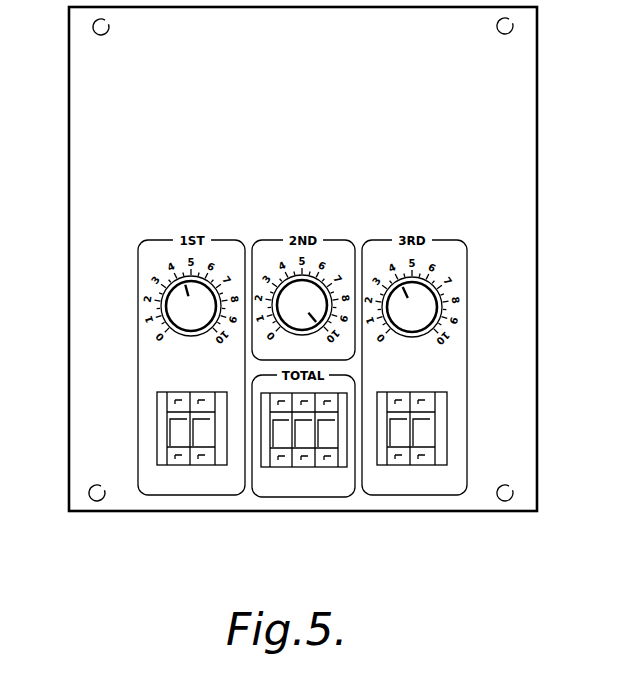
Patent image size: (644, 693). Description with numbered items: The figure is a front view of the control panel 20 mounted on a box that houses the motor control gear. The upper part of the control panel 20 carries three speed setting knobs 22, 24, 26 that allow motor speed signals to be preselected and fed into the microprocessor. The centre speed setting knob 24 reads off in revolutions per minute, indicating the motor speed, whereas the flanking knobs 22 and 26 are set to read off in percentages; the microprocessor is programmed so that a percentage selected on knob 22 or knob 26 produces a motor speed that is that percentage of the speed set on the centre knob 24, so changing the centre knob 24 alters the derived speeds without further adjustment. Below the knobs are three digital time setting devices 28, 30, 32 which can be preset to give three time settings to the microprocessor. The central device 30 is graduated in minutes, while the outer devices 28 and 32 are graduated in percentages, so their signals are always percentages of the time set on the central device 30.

The control panel 20 is at (524, 207).
The speed setting knob 22 is at (180, 310).
The speed setting knob 24 is at (298, 293).
The speed setting knob 26 is at (425, 288).
The digital time setting device 28 is at (162, 435).
The digital time setting device 30 is at (327, 457).
The digital time setting device 32 is at (440, 428).